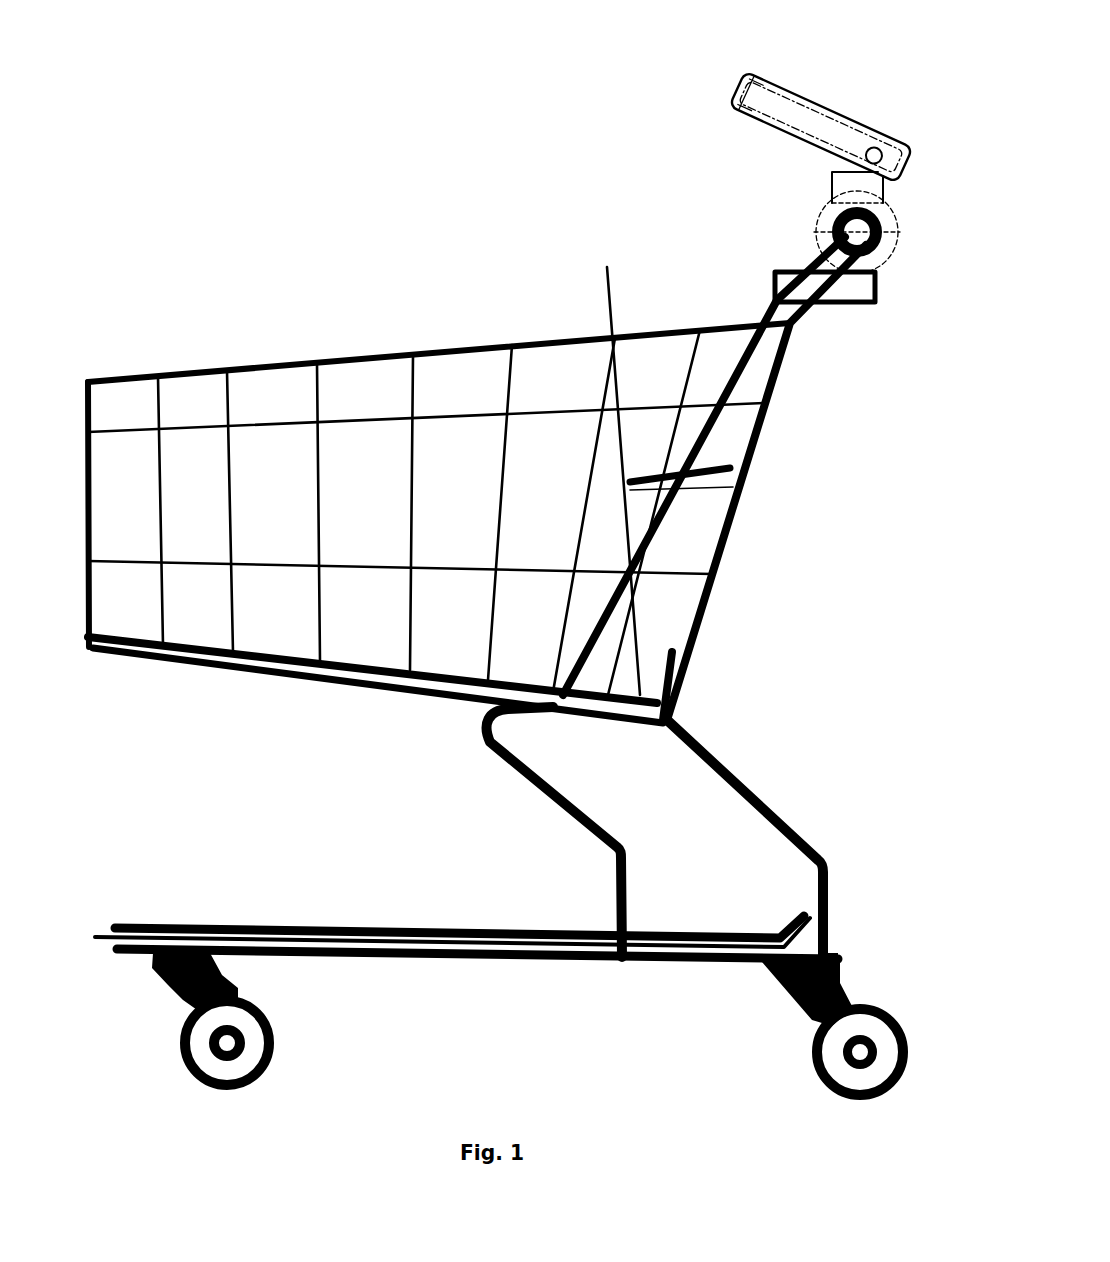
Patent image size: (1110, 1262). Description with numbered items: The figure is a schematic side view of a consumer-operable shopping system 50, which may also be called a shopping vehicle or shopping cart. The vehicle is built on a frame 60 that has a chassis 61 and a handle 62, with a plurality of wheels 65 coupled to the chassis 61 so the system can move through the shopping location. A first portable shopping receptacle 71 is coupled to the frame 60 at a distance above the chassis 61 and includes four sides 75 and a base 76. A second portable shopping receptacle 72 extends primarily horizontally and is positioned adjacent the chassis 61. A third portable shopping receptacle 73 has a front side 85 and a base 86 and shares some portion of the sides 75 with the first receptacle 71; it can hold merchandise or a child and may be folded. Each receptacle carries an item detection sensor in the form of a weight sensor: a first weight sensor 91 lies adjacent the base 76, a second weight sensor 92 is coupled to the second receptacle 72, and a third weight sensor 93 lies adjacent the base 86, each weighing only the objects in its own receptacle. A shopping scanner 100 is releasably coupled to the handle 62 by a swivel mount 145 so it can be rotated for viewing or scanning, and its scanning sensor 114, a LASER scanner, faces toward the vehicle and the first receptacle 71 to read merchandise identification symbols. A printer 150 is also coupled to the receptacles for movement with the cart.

The consumer-operable shopping system 50 is at (119, 81).
The frame 60 is at (748, 800).
The chassis 61 is at (505, 963).
The handle 62 is at (886, 243).
The wheels 65 is at (273, 1043).
The first portable shopping receptacle 71 is at (340, 357).
The second portable shopping receptacle 72 is at (97, 925).
The third portable shopping receptacle 73 is at (613, 300).
The sides 75 is at (70, 388).
The base 76 is at (236, 668).
The front side 85 is at (614, 322).
The base 86 is at (735, 480).
The first weight sensor 91 is at (290, 655).
The second weight sensor 92 is at (265, 922).
The third weight sensor 93 is at (745, 470).
The shopping scanner 100 is at (767, 101).
The scanning sensor 114 is at (784, 82).
The swivel mount 145 is at (832, 201).
The printer 150 is at (857, 304).